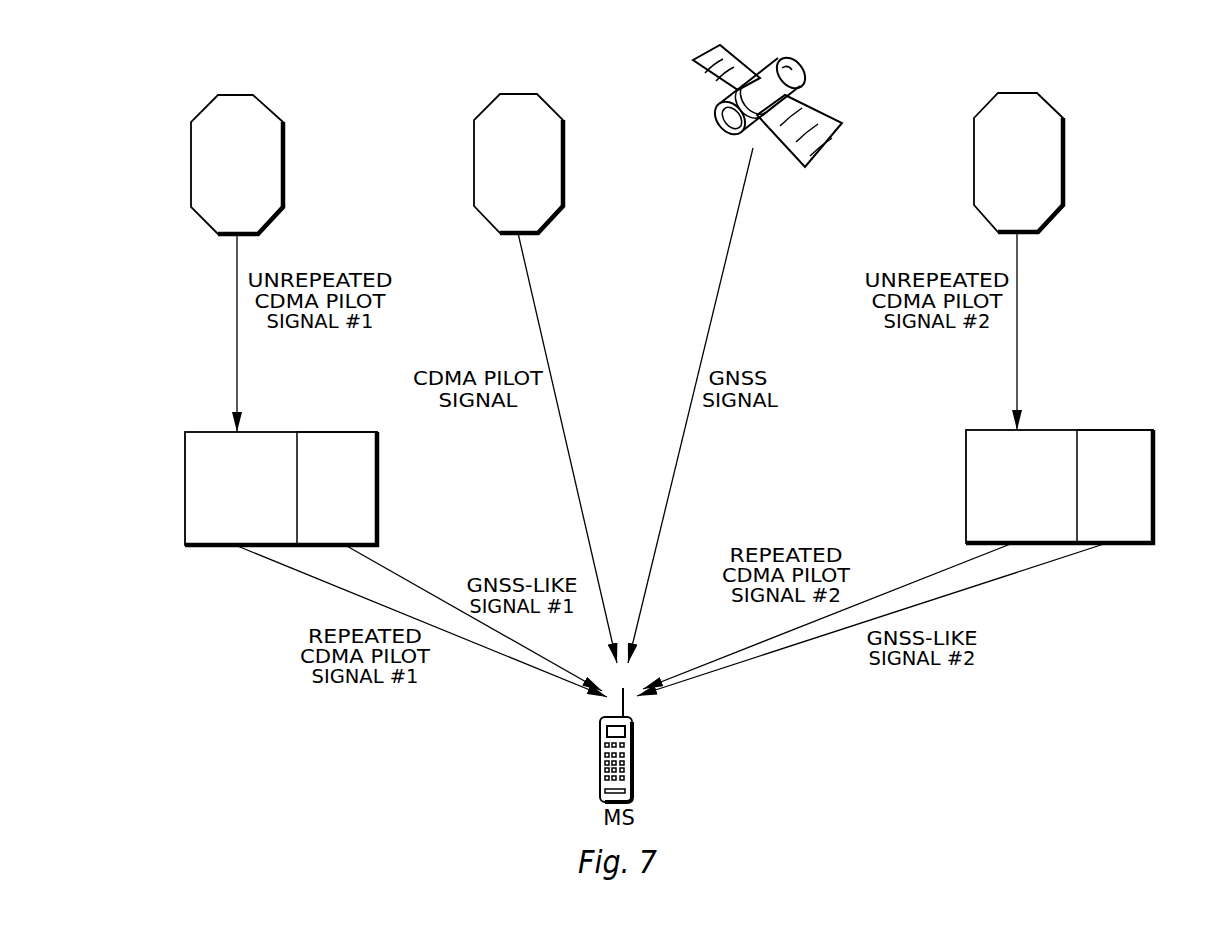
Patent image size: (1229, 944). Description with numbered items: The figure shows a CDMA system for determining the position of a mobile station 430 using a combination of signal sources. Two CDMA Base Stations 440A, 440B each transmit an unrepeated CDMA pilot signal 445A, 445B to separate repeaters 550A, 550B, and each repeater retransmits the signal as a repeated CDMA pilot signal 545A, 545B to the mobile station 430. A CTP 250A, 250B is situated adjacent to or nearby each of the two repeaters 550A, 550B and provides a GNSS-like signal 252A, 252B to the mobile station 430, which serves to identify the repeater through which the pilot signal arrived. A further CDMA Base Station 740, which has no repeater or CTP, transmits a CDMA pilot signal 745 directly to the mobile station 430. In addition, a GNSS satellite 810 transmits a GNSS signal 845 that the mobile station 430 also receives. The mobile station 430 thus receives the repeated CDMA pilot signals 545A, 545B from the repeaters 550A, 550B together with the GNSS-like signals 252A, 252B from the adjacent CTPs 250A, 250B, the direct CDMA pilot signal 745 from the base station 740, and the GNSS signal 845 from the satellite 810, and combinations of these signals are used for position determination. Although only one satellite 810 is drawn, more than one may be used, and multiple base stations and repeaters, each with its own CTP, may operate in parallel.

The CDMA Base Station 440A is at (287, 141).
The CDMA Base Station 440B is at (974, 142).
The CDMA Base Station 740 is at (474, 142).
The GNSS satellite 810 is at (718, 113).
The unrepeated CDMA pilot signal 445A is at (237, 370).
The unrepeated CDMA pilot signal 445B is at (1017, 368).
The repeater 550A is at (185, 475).
The repeater 550B is at (966, 472).
The CTP 250A is at (377, 475).
The CTP 250B is at (1153, 472).
The CDMA pilot signal 745 is at (574, 478).
The GNSS signal 845 is at (673, 478).
The repeated CDMA pilot signal 545A is at (300, 574).
The repeated CDMA pilot signal 545B is at (926, 578).
The GNSS-like signal 252A is at (407, 562).
The GNSS-like signal 252B is at (1003, 578).
The mobile station 430 is at (633, 750).